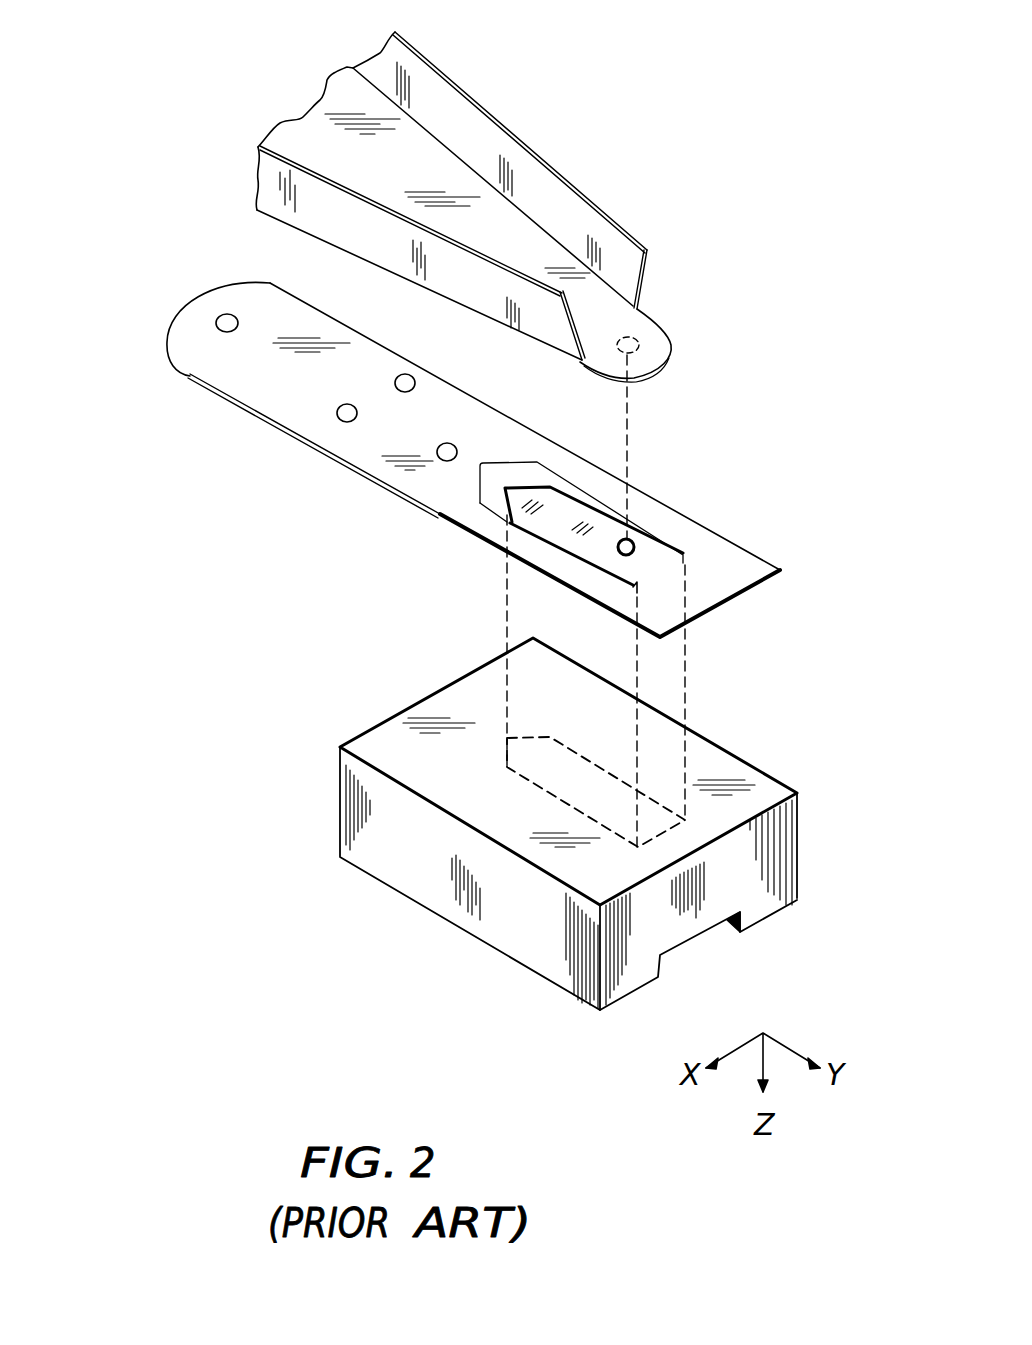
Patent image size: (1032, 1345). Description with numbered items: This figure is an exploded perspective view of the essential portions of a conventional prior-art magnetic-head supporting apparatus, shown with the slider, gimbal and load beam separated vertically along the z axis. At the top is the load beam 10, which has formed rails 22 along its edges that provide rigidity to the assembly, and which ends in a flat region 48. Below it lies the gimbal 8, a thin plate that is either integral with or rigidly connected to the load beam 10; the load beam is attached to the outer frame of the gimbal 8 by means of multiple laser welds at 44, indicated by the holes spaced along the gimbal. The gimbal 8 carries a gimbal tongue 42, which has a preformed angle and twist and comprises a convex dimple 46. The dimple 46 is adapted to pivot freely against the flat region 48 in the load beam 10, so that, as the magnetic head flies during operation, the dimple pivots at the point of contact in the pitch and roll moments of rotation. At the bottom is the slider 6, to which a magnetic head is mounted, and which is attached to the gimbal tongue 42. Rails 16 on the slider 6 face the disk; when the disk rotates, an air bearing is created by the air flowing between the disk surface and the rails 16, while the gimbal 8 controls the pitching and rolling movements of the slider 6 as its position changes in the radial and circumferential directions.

The slider 6 is at (636, 824).
The gimbal 8 is at (469, 439).
The load beam 10 is at (493, 201).
The rails 16 is at (643, 993).
The formed rails 22 is at (648, 263).
The gimbal tongue 42 is at (560, 503).
The laser welds 44 is at (213, 322).
The convex dimple 46 is at (636, 545).
The flat region 48 is at (663, 330).